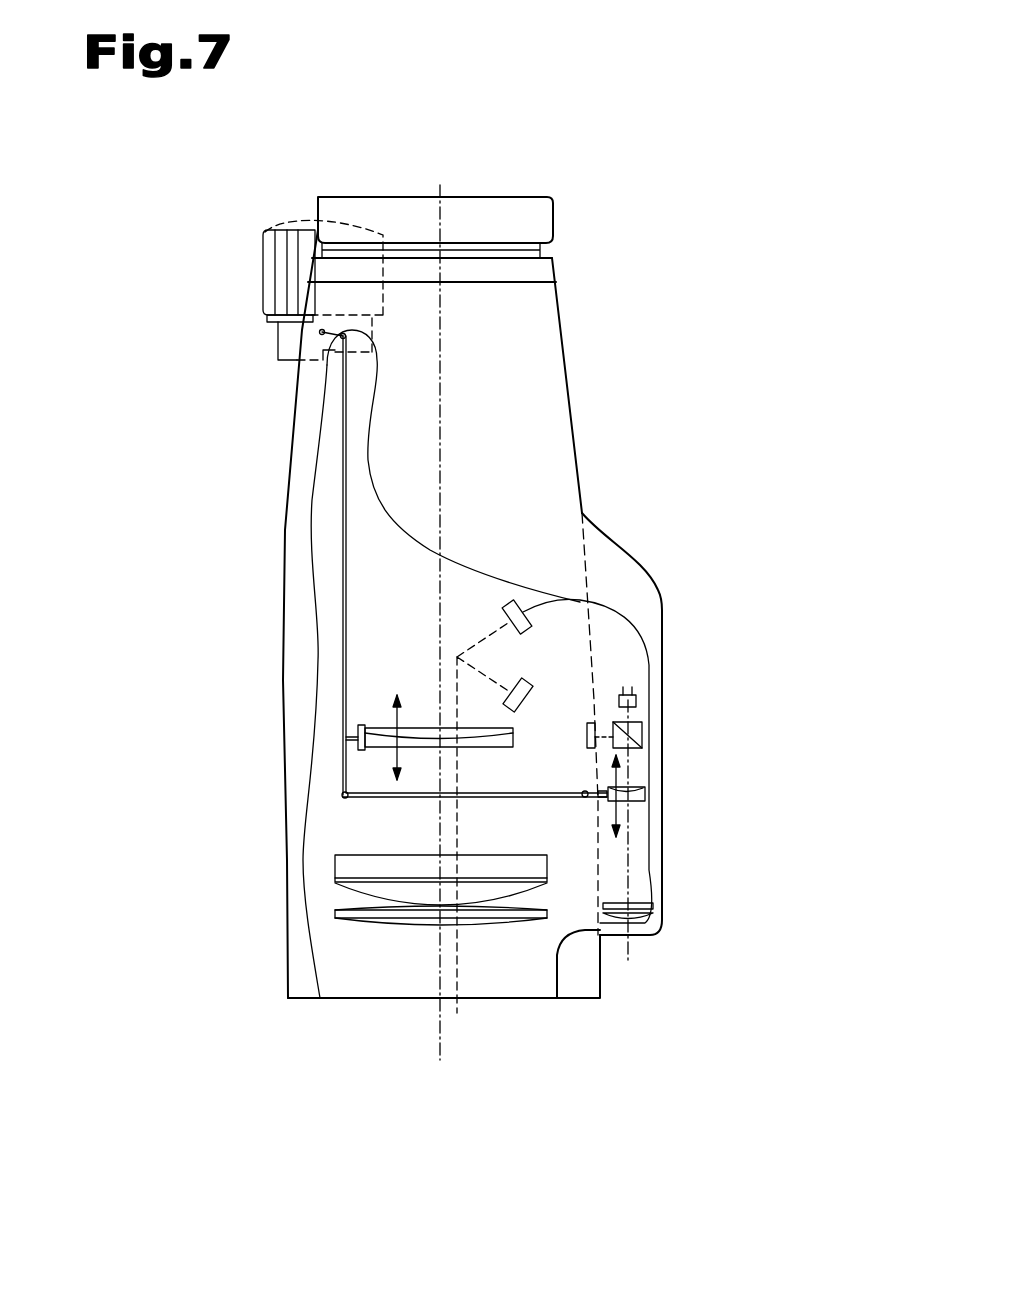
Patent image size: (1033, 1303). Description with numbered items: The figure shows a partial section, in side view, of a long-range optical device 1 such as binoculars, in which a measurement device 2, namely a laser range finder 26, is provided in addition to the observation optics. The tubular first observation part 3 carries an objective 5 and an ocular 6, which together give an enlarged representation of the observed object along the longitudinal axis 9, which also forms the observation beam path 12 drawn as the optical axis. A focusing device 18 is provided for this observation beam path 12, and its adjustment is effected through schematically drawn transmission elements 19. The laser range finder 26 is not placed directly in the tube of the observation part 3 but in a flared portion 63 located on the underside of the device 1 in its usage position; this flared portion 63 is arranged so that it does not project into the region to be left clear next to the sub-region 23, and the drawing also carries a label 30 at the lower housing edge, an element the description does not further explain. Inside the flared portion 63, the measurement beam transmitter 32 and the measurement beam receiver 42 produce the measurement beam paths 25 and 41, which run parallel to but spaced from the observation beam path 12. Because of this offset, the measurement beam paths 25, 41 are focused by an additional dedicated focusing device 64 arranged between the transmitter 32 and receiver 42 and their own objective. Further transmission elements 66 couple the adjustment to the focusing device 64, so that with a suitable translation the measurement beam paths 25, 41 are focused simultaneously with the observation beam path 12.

The long-range optical device 1 is at (556, 120).
The measurement device 2 is at (567, 651).
The first observation part 3 is at (583, 465).
The objective 5 is at (543, 1030).
The ocular 6 is at (458, 187).
The longitudinal axis 9 is at (443, 1030).
The observation beam path 12 is at (440, 378).
The focusing device 18 is at (522, 757).
The transmission elements 19 is at (340, 384).
The sub-region 23 is at (285, 848).
The measurement beam path 25 is at (476, 679).
The laser range finder 26 is at (492, 603).
The bottom wall 30 is at (578, 1000).
The measurement beam transmitter 32 is at (526, 698).
The measurement beam path 41 is at (476, 634).
The measurement beam receiver 42 is at (580, 602).
The flared portion 63 is at (670, 820).
The focusing device 64 is at (667, 789).
The transmission elements 66 is at (380, 799).